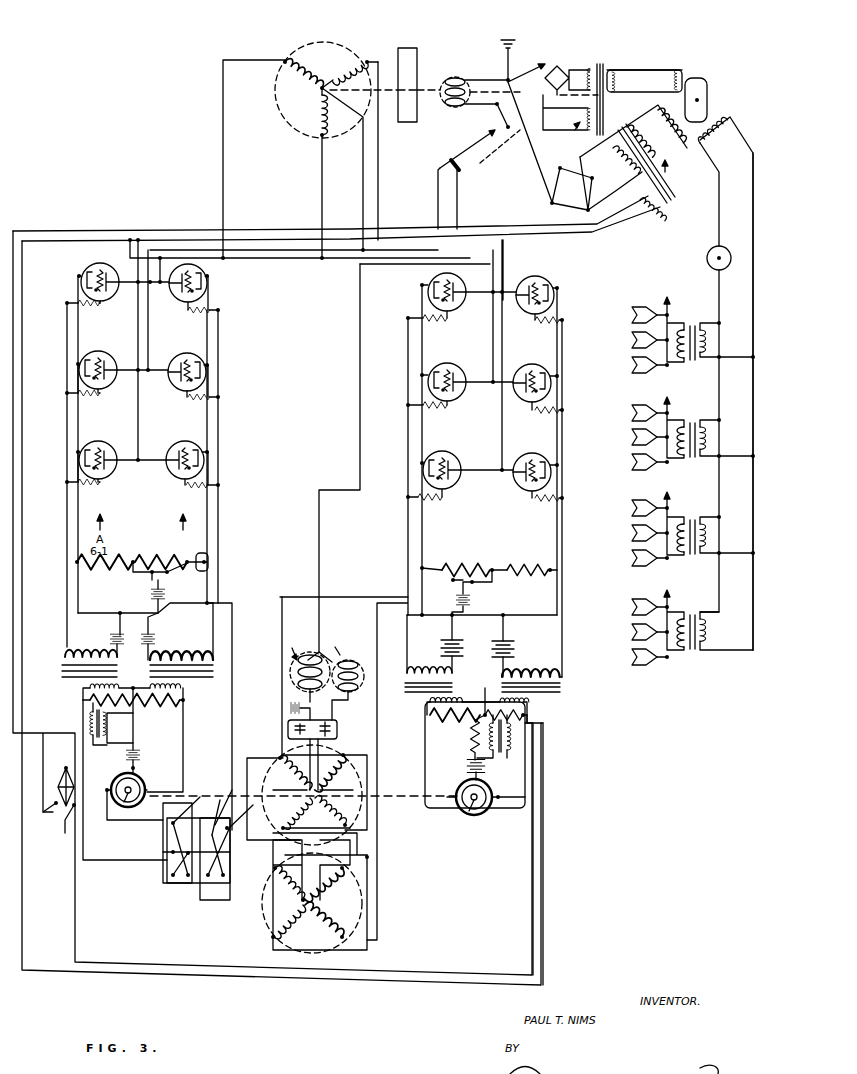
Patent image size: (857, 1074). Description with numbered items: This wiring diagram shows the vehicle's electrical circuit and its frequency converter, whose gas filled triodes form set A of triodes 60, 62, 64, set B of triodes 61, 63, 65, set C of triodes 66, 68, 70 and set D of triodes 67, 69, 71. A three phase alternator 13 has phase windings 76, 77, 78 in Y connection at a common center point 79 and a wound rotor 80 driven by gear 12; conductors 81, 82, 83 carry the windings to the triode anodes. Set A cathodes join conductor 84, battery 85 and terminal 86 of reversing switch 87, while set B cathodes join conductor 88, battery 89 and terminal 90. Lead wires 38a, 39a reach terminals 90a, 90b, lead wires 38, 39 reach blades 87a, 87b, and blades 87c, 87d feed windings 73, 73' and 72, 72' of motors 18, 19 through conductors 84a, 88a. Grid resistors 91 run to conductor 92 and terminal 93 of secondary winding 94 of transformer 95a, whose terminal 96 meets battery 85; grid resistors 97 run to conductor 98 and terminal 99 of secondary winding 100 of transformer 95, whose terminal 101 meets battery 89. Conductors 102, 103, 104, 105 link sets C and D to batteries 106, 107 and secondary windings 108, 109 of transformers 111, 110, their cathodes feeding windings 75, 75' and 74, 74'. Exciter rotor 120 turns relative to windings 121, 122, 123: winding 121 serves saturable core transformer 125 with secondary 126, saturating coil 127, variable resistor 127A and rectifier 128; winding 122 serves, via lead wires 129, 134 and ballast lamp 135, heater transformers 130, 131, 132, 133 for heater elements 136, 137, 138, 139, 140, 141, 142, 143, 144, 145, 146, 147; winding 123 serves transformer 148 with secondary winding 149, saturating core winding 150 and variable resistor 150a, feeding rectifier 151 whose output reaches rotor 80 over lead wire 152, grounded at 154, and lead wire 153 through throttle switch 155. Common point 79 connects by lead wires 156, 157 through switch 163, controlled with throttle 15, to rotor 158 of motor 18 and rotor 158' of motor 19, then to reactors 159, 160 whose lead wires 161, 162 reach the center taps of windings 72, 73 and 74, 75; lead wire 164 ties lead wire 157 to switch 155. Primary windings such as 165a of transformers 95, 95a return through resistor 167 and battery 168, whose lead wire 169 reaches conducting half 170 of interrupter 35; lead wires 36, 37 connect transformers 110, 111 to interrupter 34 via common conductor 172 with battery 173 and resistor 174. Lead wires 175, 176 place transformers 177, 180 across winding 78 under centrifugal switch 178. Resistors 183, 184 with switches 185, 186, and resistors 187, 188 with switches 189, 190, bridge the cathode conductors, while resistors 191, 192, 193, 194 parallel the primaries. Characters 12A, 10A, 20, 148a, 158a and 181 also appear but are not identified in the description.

The three phase alternator 13 is at (330, 42).
The gear 12 is at (410, 48).
The first phase winding 76 is at (352, 55).
The common center point 79 is at (322, 86).
The third phase winding 78 is at (304, 79).
The second phase winding 77 is at (324, 112).
The conductor 81 is at (380, 140).
The conductor 83 is at (223, 168).
The conductor 82 is at (320, 188).
The lead wire 156 is at (363, 158).
The wound rotor 80 is at (458, 78).
The lead wire 152 is at (506, 78).
The ground connection 154 is at (526, 64).
The full wave rectifier circuit 128 is at (553, 98).
The secondary winding 126 is at (588, 68).
The saturable core transformer 125 is at (600, 62).
The coupling winding 12A is at (620, 70).
The alternator winding 121 is at (644, 81).
The permanent magnet exciter rotor 120 is at (707, 78).
The variable resistor 127A is at (563, 120).
The saturating coil 127 is at (582, 128).
The saturated core transformer 148 is at (624, 126).
The alternator winding 123 is at (634, 131).
The arrow 148a is at (685, 170).
The alternator winding 122 is at (725, 383).
The secondary winding 149 is at (611, 177).
The full wave rectifier circuit 151 is at (556, 166).
The ballast lamp 135 is at (582, 221).
The saturating core winding 150 is at (666, 207).
The variable resistor 150a is at (632, 232).
The lead wire 157 is at (438, 192).
The heater element 138 is at (707, 258).
The lead wire 129 is at (754, 262).
The lead wire 134 is at (718, 290).
The lead wire 164 is at (470, 142).
The single pole single throw switch 163 is at (470, 169).
The throttle 15 is at (490, 339).
The lead wire 153 is at (479, 139).
The single pole double throw switch 155 is at (494, 116).
The triode 60 is at (100, 263).
The triode 61 is at (207, 278).
The triode 62 is at (104, 355).
The triode 63 is at (184, 354).
The triode 64 is at (100, 441).
The triode 65 is at (184, 442).
The triode 66 is at (458, 308).
The triode 67 is at (528, 313).
The triode 68 is at (458, 399).
The triode 69 is at (527, 402).
The triode 70 is at (452, 488).
The triode 71 is at (518, 494).
The resistor 91 is at (90, 306).
The resistor 97 is at (196, 313).
The conductor 84 is at (80, 336).
The conductor 88 is at (208, 337).
The conductor 98 is at (220, 348).
The conductor 92 is at (67, 350).
The lead wire 176 is at (13, 440).
The lead wire 175 is at (22, 462).
The conductor 102 is at (408, 353).
The conductor 103 is at (425, 346).
The conductor 104 is at (560, 346).
The conductor 105 is at (564, 354).
The transformer 130 is at (709, 329).
The transformer 131 is at (709, 427).
The transformer 132 is at (709, 523).
The transformer 133 is at (684, 612).
The heater element 136 is at (632, 310).
The heater element 137 is at (632, 408).
The heater element 139 is at (632, 436).
The heater element 140 is at (632, 367).
The heater element 141 is at (632, 460).
The heater element 142 is at (632, 505).
The heater element 143 is at (632, 603).
The heater element 144 is at (632, 531).
The heater element 145 is at (632, 630).
The heater element 146 is at (632, 556).
The heater element 147 is at (632, 655).
The resistor 184 is at (143, 560).
The switch 185 is at (210, 556).
The resistor 183 is at (86, 567).
The second switch 186 is at (150, 578).
The capacitor 20 is at (164, 590).
The switch 189 is at (430, 565).
The resistor 188 is at (465, 568).
The resistor 187 is at (520, 568).
The switch 190 is at (470, 596).
The conductor 10A is at (540, 598).
The battery 85 is at (110, 634).
The battery 89 is at (156, 638).
The secondary winding 94 is at (91, 647).
The second secondary winding 100 is at (182, 652).
The terminal 101 is at (170, 651).
The terminal 99 is at (216, 658).
The terminal 96 is at (132, 661).
The transformer 95 is at (216, 672).
The terminal 93 is at (62, 650).
The transformer 95a is at (58, 683).
The primary winding 165a is at (83, 694).
The resistor 181 is at (121, 707).
The resistor 191 is at (169, 740).
The resistor 192 is at (88, 720).
The resistor 167 is at (134, 726).
The lead wire 38 is at (184, 740).
The transformer 177 is at (82, 740).
The lead wire 39 is at (86, 752).
The battery 168 is at (140, 753).
The lead wire 169 is at (137, 768).
The interrupter 35 is at (136, 806).
The conducting half 170 is at (108, 806).
The lead wire 39a is at (135, 822).
The lead wire 38a is at (188, 800).
The terminal 90b is at (177, 843).
The switch blade 87a is at (167, 853).
The conductor 88a is at (226, 852).
The terminal 90a is at (193, 806).
The terminal 90 is at (228, 812).
The terminal 86 is at (229, 796).
The switch blade 87c is at (254, 801).
The switch blade 87d is at (256, 818).
The four pole double throw reversing switch 87 is at (168, 886).
The switch blade 87b is at (188, 888).
The conductor 84a is at (200, 905).
The centrifugally operated switch 178 is at (60, 822).
The rotor 158 is at (316, 664).
The arrow 158a is at (279, 645).
The rotor 158' is at (349, 677).
The reactor 160 is at (288, 712).
The lead wire 162 is at (288, 733).
The reactor 159 is at (330, 722).
The lead wire 161 is at (337, 736).
The polyphase motor 18 is at (360, 833).
The fourth flux-inducing phase winding 75 is at (282, 772).
The first flux-inducing phase winding 72 is at (332, 773).
The third flux-inducing phase winding 73 is at (297, 813).
The second flux-inducing phase winding 74 is at (331, 810).
The polyphase motor 19 is at (357, 902).
The fourth flux-inducing phase winding 75' is at (284, 883).
The third flux-inducing phase winding 73' is at (325, 885).
The first flux-inducing phase winding 72' is at (289, 928).
The second flux-inducing phase winding 74' is at (325, 928).
The battery 106 is at (440, 644).
The battery 107 is at (512, 646).
The secondary winding 108 is at (438, 662).
The secondary winding 109 is at (530, 674).
The transformer 111 is at (412, 694).
The transformer 110 is at (552, 694).
The common conductor 172 is at (485, 695).
The resistor 194 is at (430, 720).
The resistor 174 is at (470, 736).
The transformer 180 is at (498, 742).
The battery 173 is at (466, 756).
The lead wire 37 is at (425, 765).
The interrupter 34 is at (470, 815).
The lead wire 36 is at (530, 778).
The resistor 193 is at (543, 716).